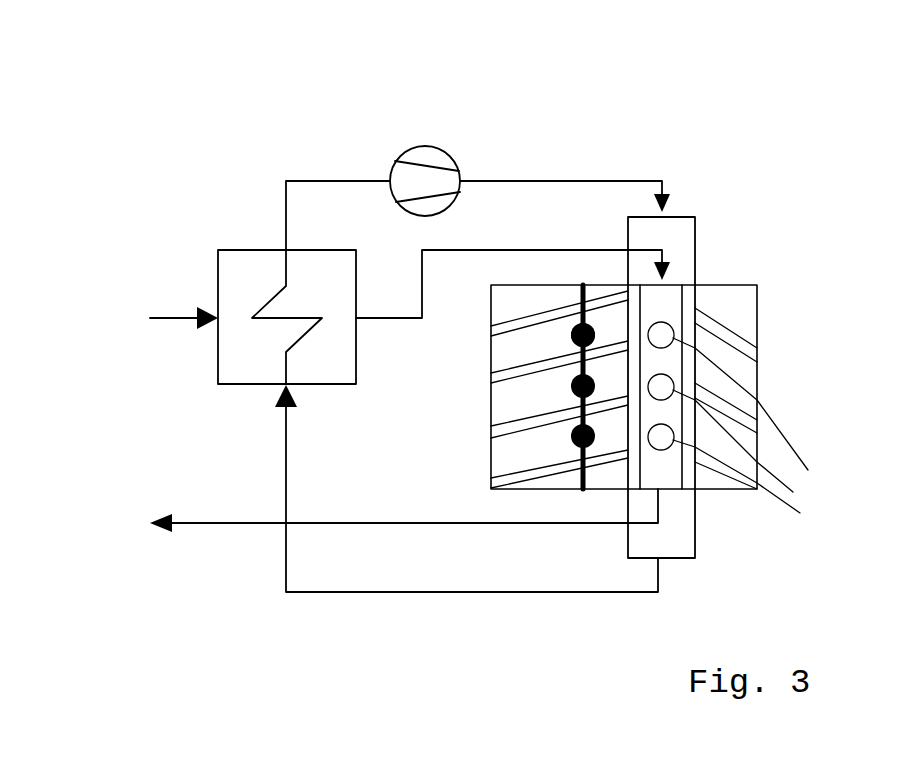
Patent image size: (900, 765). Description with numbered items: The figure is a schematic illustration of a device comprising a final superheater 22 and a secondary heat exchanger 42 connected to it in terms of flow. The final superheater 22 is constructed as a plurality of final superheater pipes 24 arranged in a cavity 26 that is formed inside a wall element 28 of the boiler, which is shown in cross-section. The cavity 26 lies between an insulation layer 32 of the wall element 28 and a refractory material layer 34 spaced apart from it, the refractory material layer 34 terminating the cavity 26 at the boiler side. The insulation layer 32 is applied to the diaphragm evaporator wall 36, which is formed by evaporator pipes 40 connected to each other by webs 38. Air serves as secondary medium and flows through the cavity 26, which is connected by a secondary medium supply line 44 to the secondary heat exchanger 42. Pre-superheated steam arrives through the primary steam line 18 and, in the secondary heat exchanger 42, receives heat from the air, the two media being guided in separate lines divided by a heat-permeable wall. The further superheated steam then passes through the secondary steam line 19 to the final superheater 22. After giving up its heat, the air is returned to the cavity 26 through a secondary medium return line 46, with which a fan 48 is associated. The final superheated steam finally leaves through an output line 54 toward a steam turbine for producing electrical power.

The primary steam line 18 is at (175, 320).
The secondary steam line 19 is at (605, 250).
The final superheater 22 is at (682, 242).
The final superheater pipes 24 is at (756, 425).
The cavity 26 is at (668, 312).
The wall element 28 is at (760, 382).
The insulation layer 32 is at (610, 478).
The refractory material layer 34 is at (743, 322).
The diaphragm evaporator wall 36 is at (572, 444).
The webs 38 is at (585, 285).
The evaporator pipes 40 is at (572, 326).
The secondary heat exchanger 42 is at (218, 274).
The secondary medium supply line 44 is at (282, 558).
The secondary medium return line 46 is at (522, 181).
The fan 48 is at (423, 146).
The output line 54 is at (385, 525).